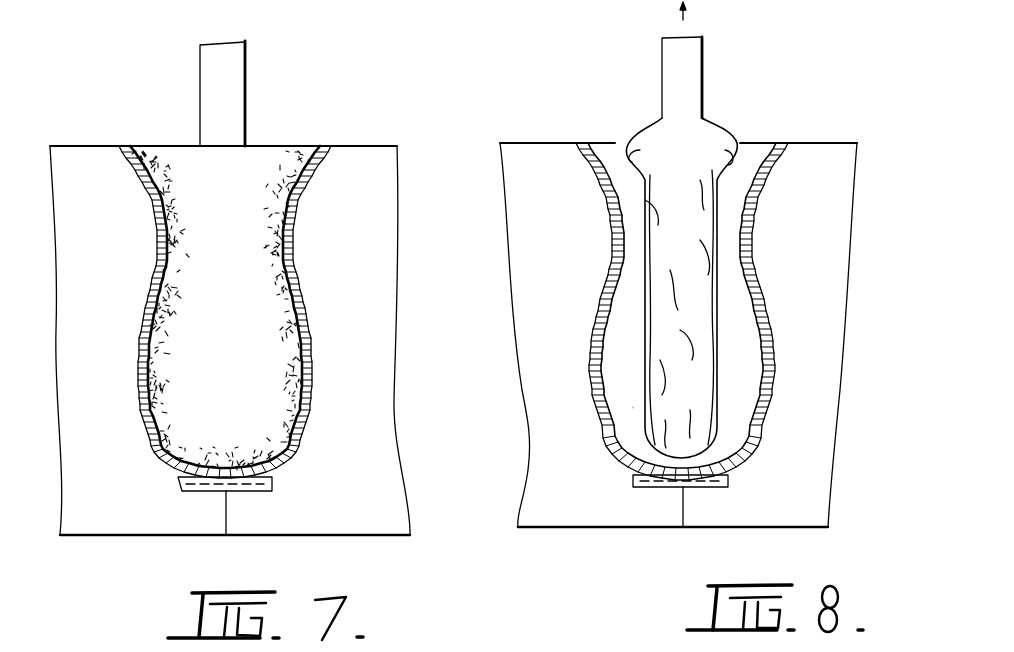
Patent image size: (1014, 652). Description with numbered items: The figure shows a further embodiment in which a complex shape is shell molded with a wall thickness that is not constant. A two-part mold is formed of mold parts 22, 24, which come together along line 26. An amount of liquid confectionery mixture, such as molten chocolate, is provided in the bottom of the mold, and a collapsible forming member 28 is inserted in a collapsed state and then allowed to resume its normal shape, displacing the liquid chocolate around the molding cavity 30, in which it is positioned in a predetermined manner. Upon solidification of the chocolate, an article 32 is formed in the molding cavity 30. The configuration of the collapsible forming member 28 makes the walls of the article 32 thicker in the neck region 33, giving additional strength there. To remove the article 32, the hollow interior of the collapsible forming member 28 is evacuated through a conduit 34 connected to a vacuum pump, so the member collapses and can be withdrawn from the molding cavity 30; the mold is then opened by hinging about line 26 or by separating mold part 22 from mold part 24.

In FIG. 7, the mold part 22 is at (117, 502).
In FIG. 8, the mold part 22 is at (550, 327).
In FIG. 7, the mold part 24 is at (365, 198).
In FIG. 8, the mold part 24 is at (813, 418).
In FIG. 7, the line 26 is at (225, 511).
In FIG. 8, the line 26 is at (673, 517).
In FIG. 7, the collapsible forming member 28 is at (255, 167).
In FIG. 8, the collapsible forming member 28 is at (712, 147).
In FIG. 7, the molding cavity 30 is at (146, 136).
In FIG. 8, the molding cavity 30 is at (633, 407).
In FIG. 7, the article 32 is at (118, 146).
In FIG. 8, the neck region 33 is at (613, 225).
In FIG. 8, the conduit 34 is at (682, 65).